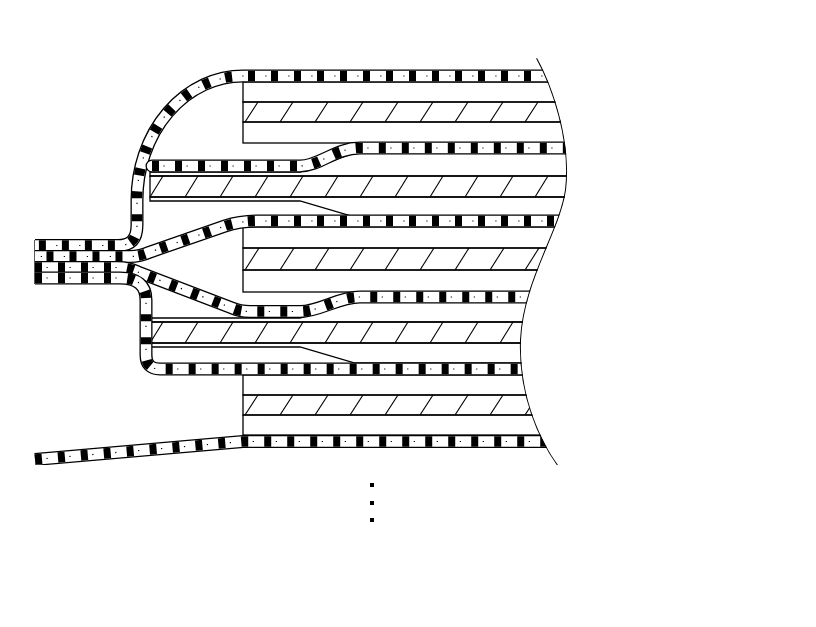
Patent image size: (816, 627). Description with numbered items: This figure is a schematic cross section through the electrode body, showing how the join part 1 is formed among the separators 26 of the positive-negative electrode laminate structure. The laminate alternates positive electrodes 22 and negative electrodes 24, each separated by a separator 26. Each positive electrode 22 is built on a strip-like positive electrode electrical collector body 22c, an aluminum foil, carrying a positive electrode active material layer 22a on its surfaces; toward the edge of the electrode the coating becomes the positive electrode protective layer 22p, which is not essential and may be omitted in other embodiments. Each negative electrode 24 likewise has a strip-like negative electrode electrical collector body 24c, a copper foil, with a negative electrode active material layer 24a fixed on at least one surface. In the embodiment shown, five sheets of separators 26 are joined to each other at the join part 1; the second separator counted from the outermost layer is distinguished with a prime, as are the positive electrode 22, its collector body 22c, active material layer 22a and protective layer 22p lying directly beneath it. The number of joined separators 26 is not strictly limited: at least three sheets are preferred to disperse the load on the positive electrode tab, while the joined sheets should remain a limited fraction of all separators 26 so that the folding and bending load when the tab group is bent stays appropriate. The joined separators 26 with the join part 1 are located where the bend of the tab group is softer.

The join part 1 is at (48, 240).
The positive electrode 22 is at (700, 158).
The positive electrode active material layer 22a is at (565, 165).
The positive electrode electrical collector body 22c is at (563, 187).
The positive electrode protective layer 22p is at (205, 183).
The negative electrode 24 is at (662, 57).
The negative electrode active material layer 24a is at (557, 93).
The negative electrode electrical collector body 24c is at (565, 115).
The separator 26 is at (547, 73).